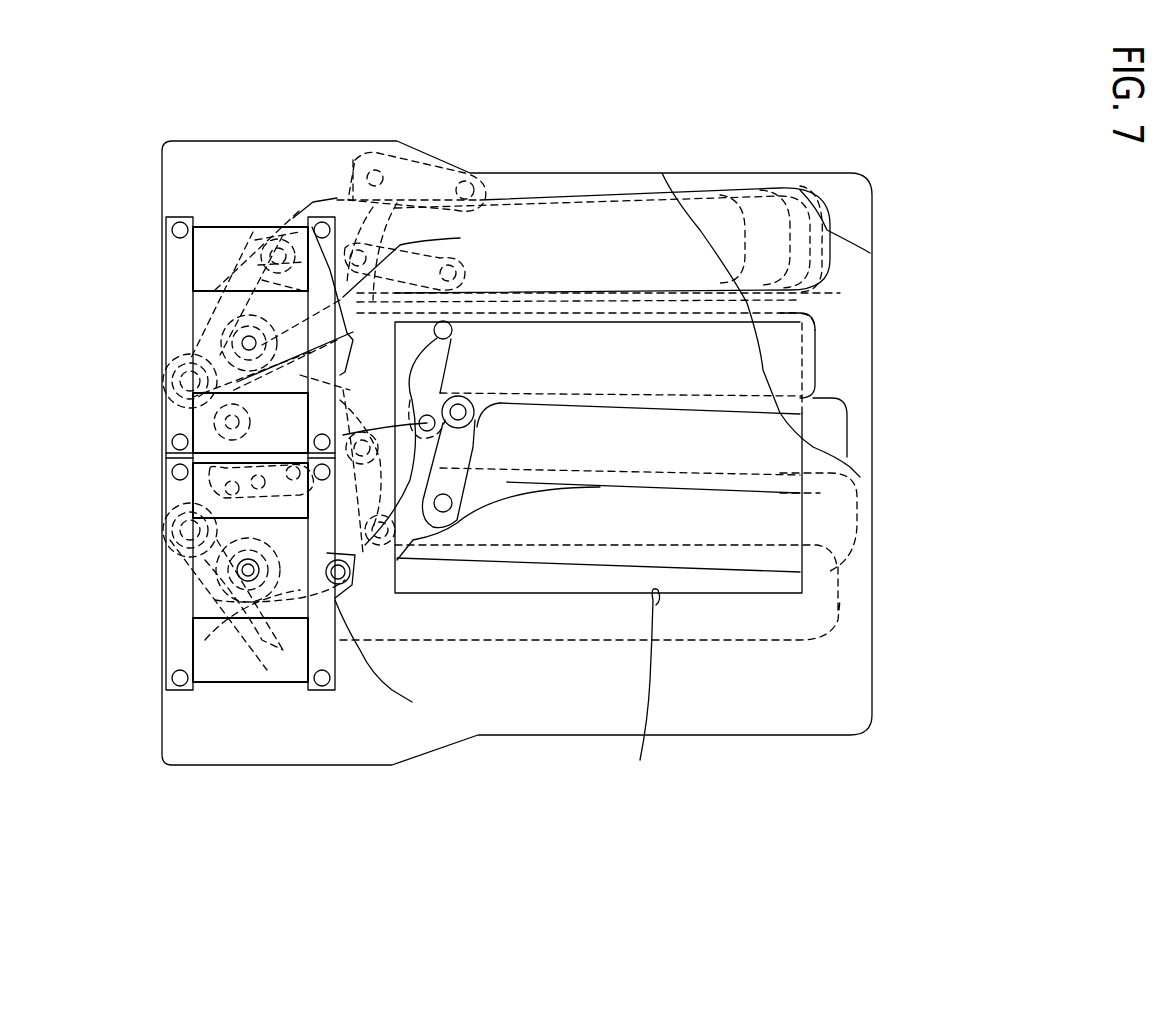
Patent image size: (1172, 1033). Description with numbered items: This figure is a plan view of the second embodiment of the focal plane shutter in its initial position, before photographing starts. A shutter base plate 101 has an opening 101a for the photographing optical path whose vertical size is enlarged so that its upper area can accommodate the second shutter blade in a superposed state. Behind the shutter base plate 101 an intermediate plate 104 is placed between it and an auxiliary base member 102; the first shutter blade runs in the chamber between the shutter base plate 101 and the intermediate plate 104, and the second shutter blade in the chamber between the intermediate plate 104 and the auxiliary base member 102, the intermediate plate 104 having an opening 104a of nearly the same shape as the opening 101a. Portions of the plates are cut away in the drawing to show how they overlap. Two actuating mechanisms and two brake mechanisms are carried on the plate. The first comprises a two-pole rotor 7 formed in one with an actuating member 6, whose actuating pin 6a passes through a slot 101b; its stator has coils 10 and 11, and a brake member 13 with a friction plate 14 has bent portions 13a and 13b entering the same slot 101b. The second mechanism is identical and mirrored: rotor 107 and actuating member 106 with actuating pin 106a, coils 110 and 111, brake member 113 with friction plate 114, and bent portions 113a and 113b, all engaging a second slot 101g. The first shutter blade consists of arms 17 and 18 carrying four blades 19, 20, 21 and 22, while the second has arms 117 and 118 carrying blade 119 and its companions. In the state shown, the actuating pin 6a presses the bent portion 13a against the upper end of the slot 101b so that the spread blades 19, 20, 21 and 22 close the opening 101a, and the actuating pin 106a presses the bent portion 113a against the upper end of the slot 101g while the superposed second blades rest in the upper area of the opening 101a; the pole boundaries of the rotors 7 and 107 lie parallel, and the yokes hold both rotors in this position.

The shutter base plate 101 is at (689, 720).
The opening 101a is at (639, 689).
The slot 101b is at (393, 668).
The slot 101g is at (424, 262).
The auxiliary base member 102 is at (858, 187).
The intermediate plate 104 is at (850, 292).
The opening 104a is at (790, 340).
The actuating member 106 is at (195, 305).
The actuating pin 106a is at (285, 222).
The rotor 107 is at (200, 318).
The coil 110 is at (220, 233).
The coil 111 is at (190, 425).
The brake member 113 is at (200, 350).
The bent portion 113a is at (253, 230).
The bent portion 113b is at (442, 368).
The friction plate 114 is at (185, 375).
The arm 117 is at (435, 175).
The arm 118 is at (462, 278).
The blade 119 is at (720, 225).
The coil 10 is at (170, 478).
The coil 11 is at (232, 680).
The brake member 13 is at (175, 535).
The bent portion 13a is at (355, 573).
The bent portion 13b is at (268, 650).
The friction plate 14 is at (175, 505).
The arm 17 is at (470, 448).
The arm 18 is at (447, 340).
The blade 19 is at (830, 590).
The blade 20 is at (850, 520).
The blade 21 is at (835, 437).
The blade 22 is at (785, 375).
The actuating member 6 is at (195, 578).
The actuating pin 6a is at (355, 588).
The rotor 7 is at (195, 562).